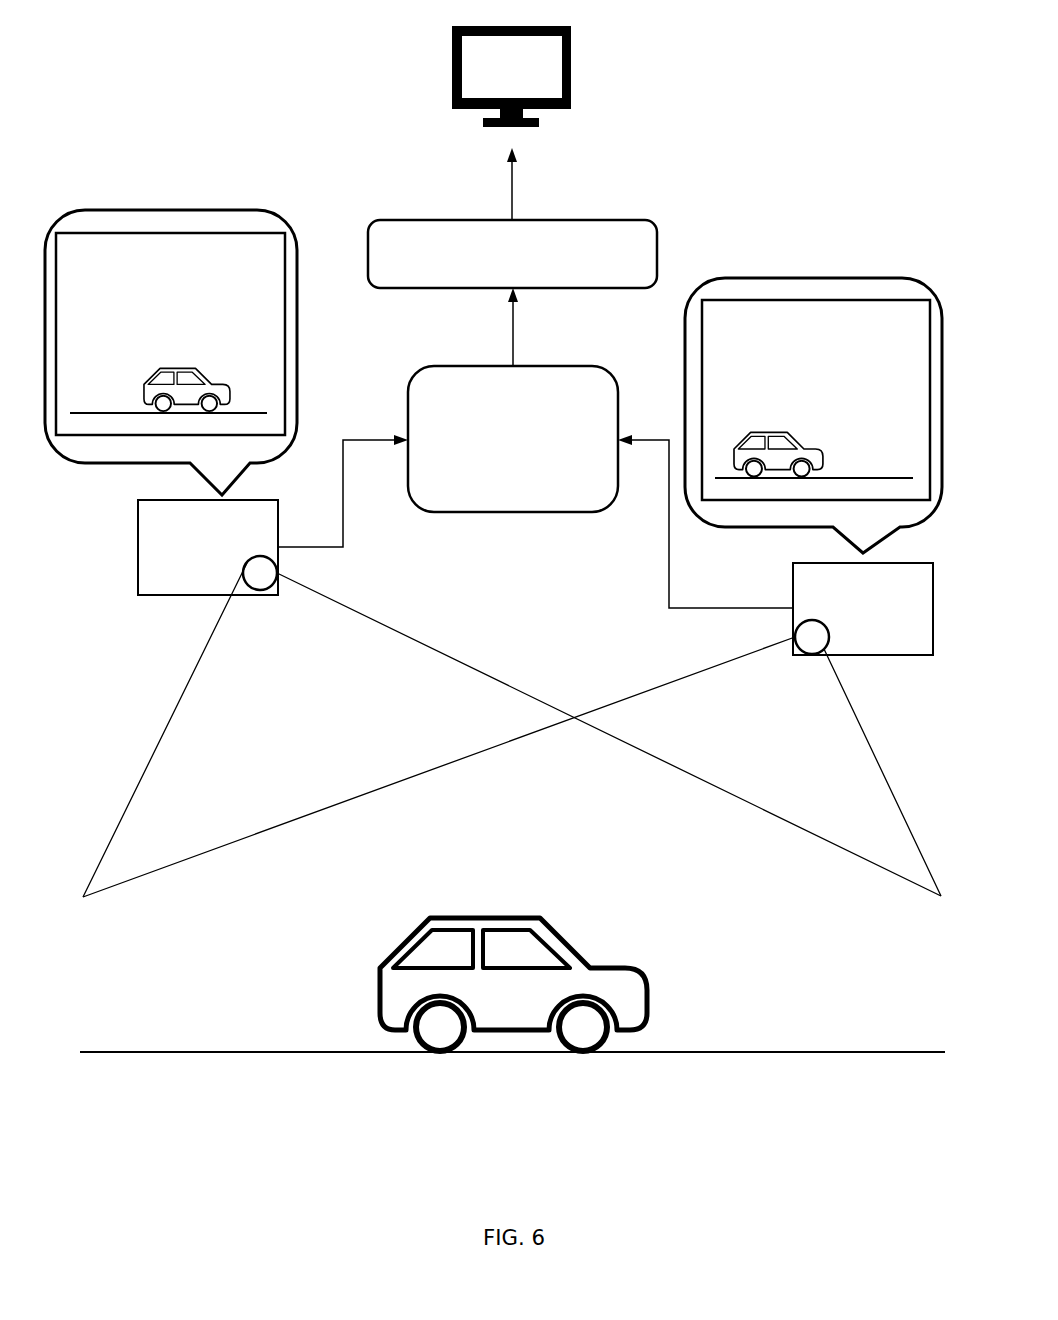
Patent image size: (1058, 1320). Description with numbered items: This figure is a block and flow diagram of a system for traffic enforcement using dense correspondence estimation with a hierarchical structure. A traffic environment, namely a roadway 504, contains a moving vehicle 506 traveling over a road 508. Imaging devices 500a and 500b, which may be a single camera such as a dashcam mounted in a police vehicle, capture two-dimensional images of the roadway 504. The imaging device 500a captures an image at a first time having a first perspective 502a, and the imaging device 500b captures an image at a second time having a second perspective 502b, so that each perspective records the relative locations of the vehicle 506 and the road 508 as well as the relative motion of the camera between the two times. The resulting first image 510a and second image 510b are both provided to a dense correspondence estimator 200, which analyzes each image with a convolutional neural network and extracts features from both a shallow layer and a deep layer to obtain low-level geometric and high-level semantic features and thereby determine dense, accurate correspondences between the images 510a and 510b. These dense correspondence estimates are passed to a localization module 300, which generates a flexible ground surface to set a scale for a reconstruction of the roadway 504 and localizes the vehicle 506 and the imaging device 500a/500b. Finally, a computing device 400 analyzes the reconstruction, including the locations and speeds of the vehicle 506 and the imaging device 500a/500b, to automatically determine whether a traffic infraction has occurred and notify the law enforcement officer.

The computing device 400 is at (595, 72).
The localization module 300 is at (638, 268).
The dense correspondence estimator 200 is at (495, 494).
The first image 510a is at (873, 278).
The second image 510b is at (194, 210).
The imaging device 500a is at (840, 652).
The imaging device 500b is at (183, 589).
The first perspective 502a is at (685, 680).
The second perspective 502b is at (365, 637).
The roadway 504 is at (576, 933).
The vehicle 506 is at (670, 985).
The road 508 is at (726, 1068).